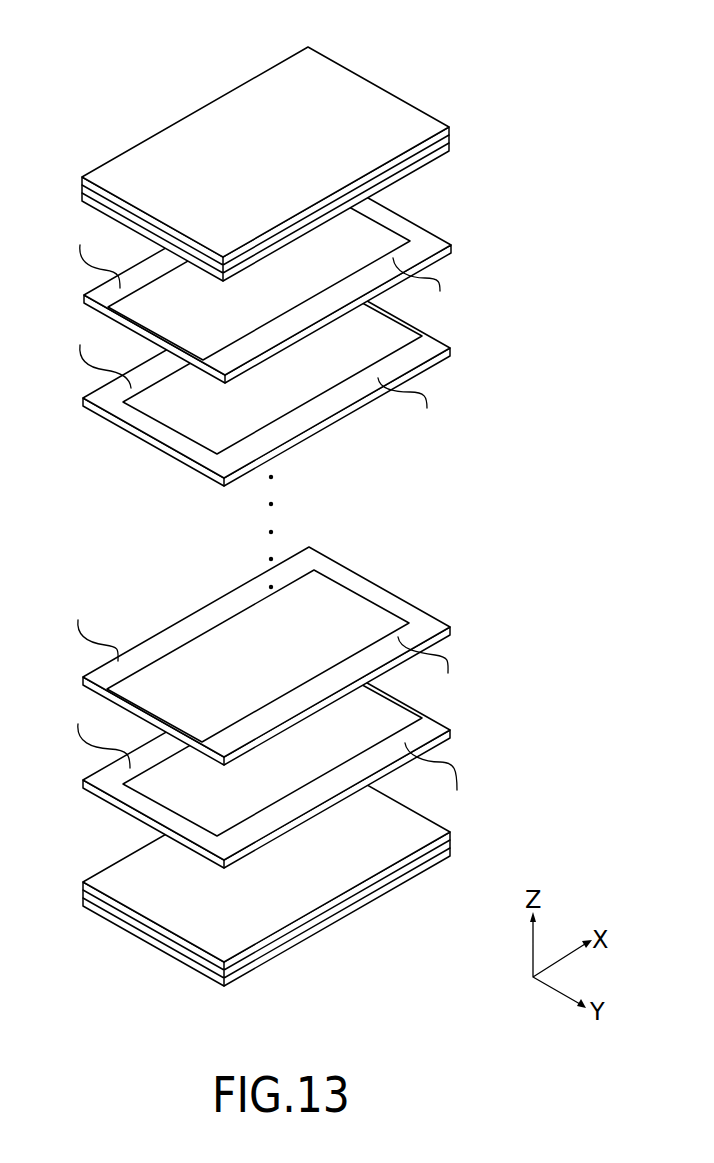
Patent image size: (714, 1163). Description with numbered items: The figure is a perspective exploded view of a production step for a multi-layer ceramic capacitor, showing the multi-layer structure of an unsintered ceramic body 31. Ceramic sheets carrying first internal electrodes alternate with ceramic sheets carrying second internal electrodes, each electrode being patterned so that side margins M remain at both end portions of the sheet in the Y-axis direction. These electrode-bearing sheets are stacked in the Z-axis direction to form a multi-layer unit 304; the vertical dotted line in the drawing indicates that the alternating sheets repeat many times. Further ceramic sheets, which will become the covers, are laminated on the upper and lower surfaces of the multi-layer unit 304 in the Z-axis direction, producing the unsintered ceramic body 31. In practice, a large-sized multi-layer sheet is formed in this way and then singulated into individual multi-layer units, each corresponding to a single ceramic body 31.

The unsintered ceramic body 31 is at (101, 49).
The multi-layer unit 304 is at (360, 516).